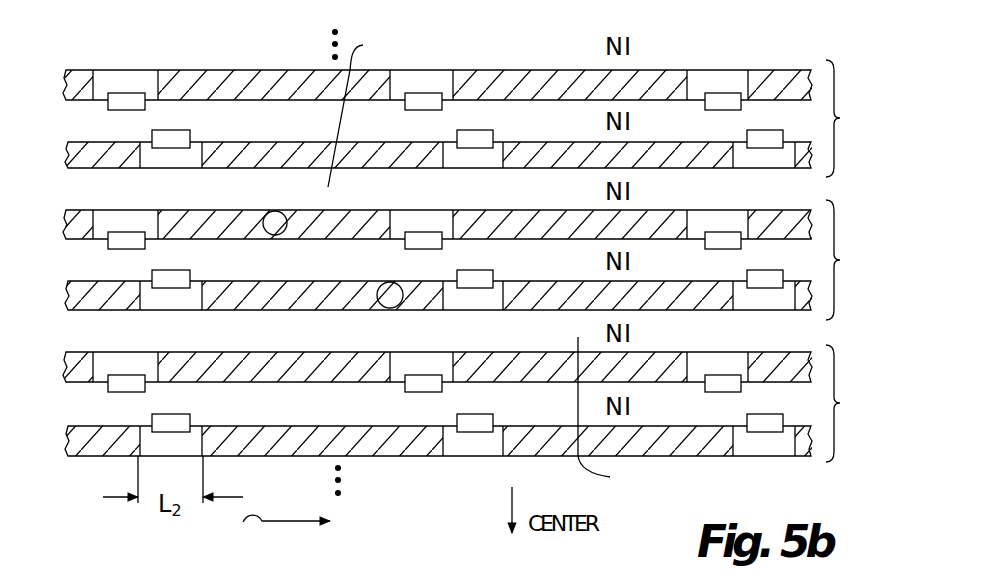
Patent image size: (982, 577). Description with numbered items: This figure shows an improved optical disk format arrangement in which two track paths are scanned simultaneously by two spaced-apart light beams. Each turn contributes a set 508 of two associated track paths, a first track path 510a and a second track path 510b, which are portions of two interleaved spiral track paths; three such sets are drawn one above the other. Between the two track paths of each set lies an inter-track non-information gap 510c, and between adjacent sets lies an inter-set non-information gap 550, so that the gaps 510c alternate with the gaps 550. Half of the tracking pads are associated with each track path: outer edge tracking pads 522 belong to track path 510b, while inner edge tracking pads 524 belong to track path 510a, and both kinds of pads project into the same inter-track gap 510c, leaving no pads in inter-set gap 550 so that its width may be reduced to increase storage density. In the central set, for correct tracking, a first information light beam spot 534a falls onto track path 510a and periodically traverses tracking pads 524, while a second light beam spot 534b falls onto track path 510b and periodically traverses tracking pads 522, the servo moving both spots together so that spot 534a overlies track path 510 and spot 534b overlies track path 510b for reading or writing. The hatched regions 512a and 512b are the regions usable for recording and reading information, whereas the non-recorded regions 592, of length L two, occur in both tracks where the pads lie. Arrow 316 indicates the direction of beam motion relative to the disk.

The set 508 is at (861, 261).
The track path 510 is at (773, 456).
The track path 510a is at (138, 76).
The track path 510b is at (152, 168).
The inter-track non-information gap 510c is at (654, 110).
The hatched region 512a is at (224, 71).
The hatched region 512b is at (262, 142).
The outer edge tracking pad 522 is at (186, 130).
The inner edge tracking pad 524 is at (115, 111).
The first information light beam spot 534a is at (273, 210).
The second light beam spot 534b is at (402, 308).
The inter-set non-information gap 550 is at (489, 260).
The non-recorded region 592 is at (117, 477).
The arrow 316 is at (285, 536).